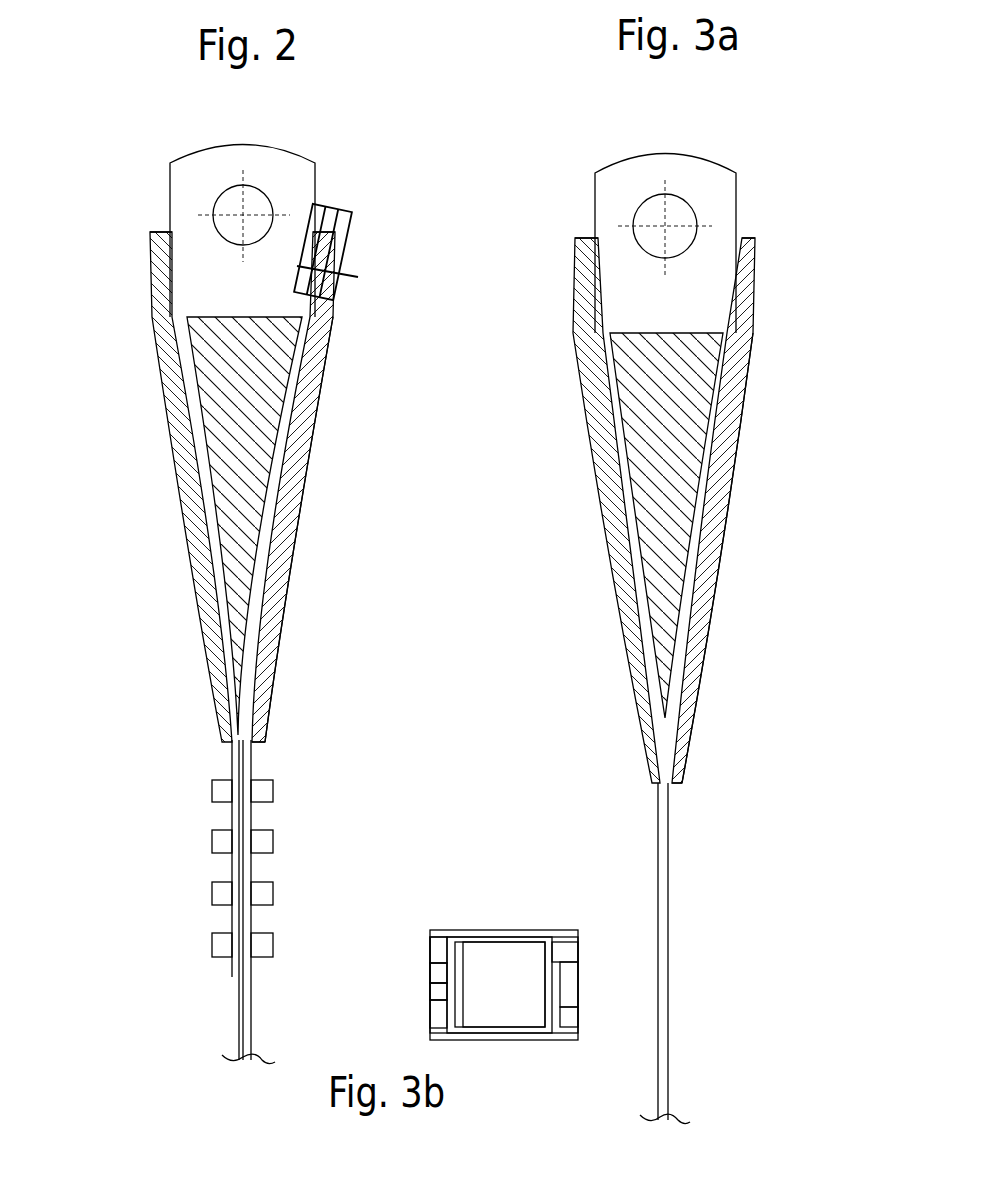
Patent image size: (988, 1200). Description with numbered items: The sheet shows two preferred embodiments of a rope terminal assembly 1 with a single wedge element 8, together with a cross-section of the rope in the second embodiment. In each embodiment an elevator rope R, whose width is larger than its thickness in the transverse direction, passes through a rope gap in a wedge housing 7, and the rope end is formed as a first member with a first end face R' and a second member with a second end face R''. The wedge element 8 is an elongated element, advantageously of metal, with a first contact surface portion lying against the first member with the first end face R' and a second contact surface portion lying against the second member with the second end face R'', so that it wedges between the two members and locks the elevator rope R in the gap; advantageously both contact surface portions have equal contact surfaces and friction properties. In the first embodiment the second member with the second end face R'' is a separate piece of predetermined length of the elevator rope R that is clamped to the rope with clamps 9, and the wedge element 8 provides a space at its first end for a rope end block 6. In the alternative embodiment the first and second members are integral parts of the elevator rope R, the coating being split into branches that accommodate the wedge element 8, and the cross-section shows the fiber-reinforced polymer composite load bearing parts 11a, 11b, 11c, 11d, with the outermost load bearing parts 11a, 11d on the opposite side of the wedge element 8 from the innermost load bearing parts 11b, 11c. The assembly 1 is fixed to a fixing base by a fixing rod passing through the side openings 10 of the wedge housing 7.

In FIG. 2, the rope terminal assembly 1 is at (347, 178).
In FIG. 3A, the rope terminal assembly 1 is at (770, 172).
In FIG. 2, the rope end block 6 is at (333, 263).
In FIG. 2, the wedge housing 7 is at (270, 621).
In FIG. 3A, the wedge housing 7 is at (677, 713).
In FIG. 2, the wedge element 8 is at (263, 388).
In FIG. 3A, the wedge element 8 is at (687, 438).
In FIG. 3B, the wedge element 8 is at (520, 1008).
In FIG. 2, the clamps 9 is at (222, 840).
In FIG. 2, the side openings 10 is at (215, 197).
In FIG. 3A, the side openings 10 is at (637, 205).
In FIG. 2, the elevator rope R is at (311, 898).
In FIG. 3A, the elevator rope R is at (730, 953).
In FIG. 2, the first end face of the first member R' is at (362, 473).
In FIG. 3A, the first end face of the first member R' is at (782, 499).
In FIG. 2, the second end face of the second member R'' is at (134, 446).
In FIG. 3A, the second end face of the second member R'' is at (560, 471).
In FIG. 3B, the load bearing part 11a is at (565, 957).
In FIG. 3B, the load bearing part 11b is at (437, 972).
In FIG. 3B, the load bearing part 11c is at (437, 992).
In FIG. 3B, the load bearing part 11d is at (567, 1015).